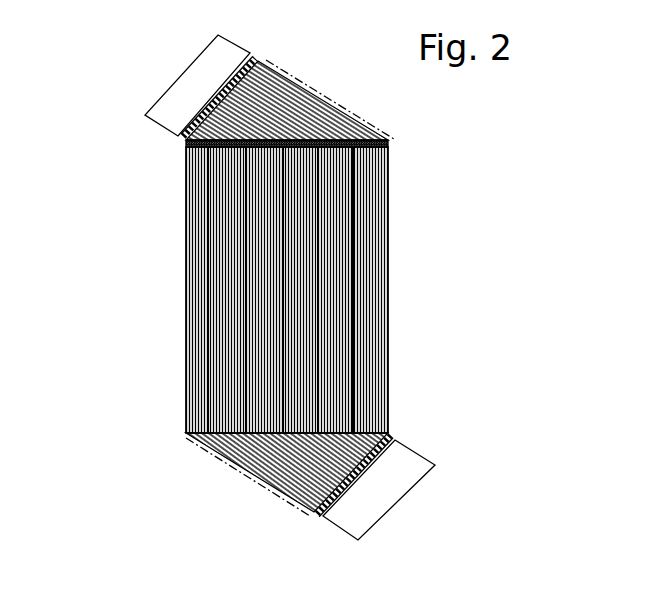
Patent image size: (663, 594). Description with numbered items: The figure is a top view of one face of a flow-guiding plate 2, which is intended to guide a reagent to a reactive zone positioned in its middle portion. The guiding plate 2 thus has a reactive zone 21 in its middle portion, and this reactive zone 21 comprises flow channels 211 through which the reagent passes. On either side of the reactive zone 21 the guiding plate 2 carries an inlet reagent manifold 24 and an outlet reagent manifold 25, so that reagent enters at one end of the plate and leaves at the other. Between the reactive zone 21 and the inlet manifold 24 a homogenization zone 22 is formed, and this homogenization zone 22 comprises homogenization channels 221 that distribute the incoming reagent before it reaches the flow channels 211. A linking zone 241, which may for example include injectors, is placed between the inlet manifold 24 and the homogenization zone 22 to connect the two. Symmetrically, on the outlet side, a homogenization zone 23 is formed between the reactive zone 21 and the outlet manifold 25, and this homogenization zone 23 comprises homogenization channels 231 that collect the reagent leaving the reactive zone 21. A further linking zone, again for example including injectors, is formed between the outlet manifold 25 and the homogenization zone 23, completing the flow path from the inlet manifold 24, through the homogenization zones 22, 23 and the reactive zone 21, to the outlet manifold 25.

The flow-guiding plate 2 is at (172, 252).
The reactive zone 21 is at (178, 355).
The flow channels 211 is at (376, 260).
The homogenization zone 22 is at (327, 93).
The homogenization channels 221 is at (178, 133).
The homogenization zone 23 is at (232, 466).
The homogenization channels 231 is at (382, 424).
The inlet reagent manifold 24 is at (178, 73).
The linking zone 241 is at (181, 108).
The outlet reagent manifold 25 is at (375, 483).